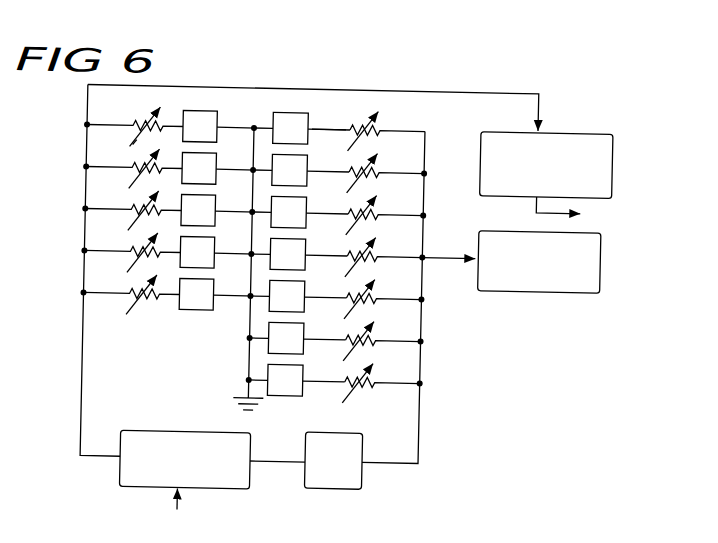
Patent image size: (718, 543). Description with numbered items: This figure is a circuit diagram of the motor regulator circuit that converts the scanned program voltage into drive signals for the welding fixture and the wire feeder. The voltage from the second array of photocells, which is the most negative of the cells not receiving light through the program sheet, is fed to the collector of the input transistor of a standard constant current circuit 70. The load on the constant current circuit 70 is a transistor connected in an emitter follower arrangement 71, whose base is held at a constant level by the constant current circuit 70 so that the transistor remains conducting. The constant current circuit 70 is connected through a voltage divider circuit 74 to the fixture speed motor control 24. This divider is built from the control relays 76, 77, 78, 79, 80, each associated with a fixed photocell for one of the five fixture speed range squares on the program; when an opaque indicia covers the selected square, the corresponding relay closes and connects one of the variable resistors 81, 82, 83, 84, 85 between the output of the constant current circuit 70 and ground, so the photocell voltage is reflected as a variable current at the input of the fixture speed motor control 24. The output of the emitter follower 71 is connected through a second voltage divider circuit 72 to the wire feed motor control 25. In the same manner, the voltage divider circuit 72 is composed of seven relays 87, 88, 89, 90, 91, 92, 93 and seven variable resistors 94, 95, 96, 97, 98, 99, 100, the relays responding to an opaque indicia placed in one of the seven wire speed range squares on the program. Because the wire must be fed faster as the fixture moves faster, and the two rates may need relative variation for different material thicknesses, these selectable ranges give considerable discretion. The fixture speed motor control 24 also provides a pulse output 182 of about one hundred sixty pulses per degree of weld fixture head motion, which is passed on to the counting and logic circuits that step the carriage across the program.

The constant current circuit 70 is at (162, 433).
The emitter follower arrangement 71 is at (370, 439).
The voltage divider circuit 72 is at (328, 113).
The voltage divider circuit 74 is at (166, 110).
The control relay 76 is at (217, 115).
The control relay 77 is at (217, 157).
The control relay 78 is at (217, 199).
The control relay 79 is at (217, 241).
The control relay 80 is at (217, 283).
The variable resistor 81 is at (134, 128).
The variable resistor 82 is at (134, 170).
The variable resistor 83 is at (134, 212).
The variable resistor 84 is at (134, 254).
The variable resistor 85 is at (134, 296).
The relay 87 is at (308, 138).
The relay 88 is at (308, 180).
The relay 89 is at (308, 222).
The relay 90 is at (308, 264).
The relay 91 is at (308, 306).
The relay 92 is at (308, 348).
The relay 93 is at (308, 390).
The variable resistor 94 is at (385, 121).
The variable resistor 95 is at (385, 163).
The variable resistor 96 is at (385, 205).
The variable resistor 97 is at (385, 247).
The variable resistor 98 is at (385, 289).
The variable resistor 99 is at (385, 331).
The variable resistor 100 is at (385, 373).
The fixture speed motor control 24 is at (608, 127).
The wire feed motor control 25 is at (540, 286).
The pulse output 182 is at (539, 207).